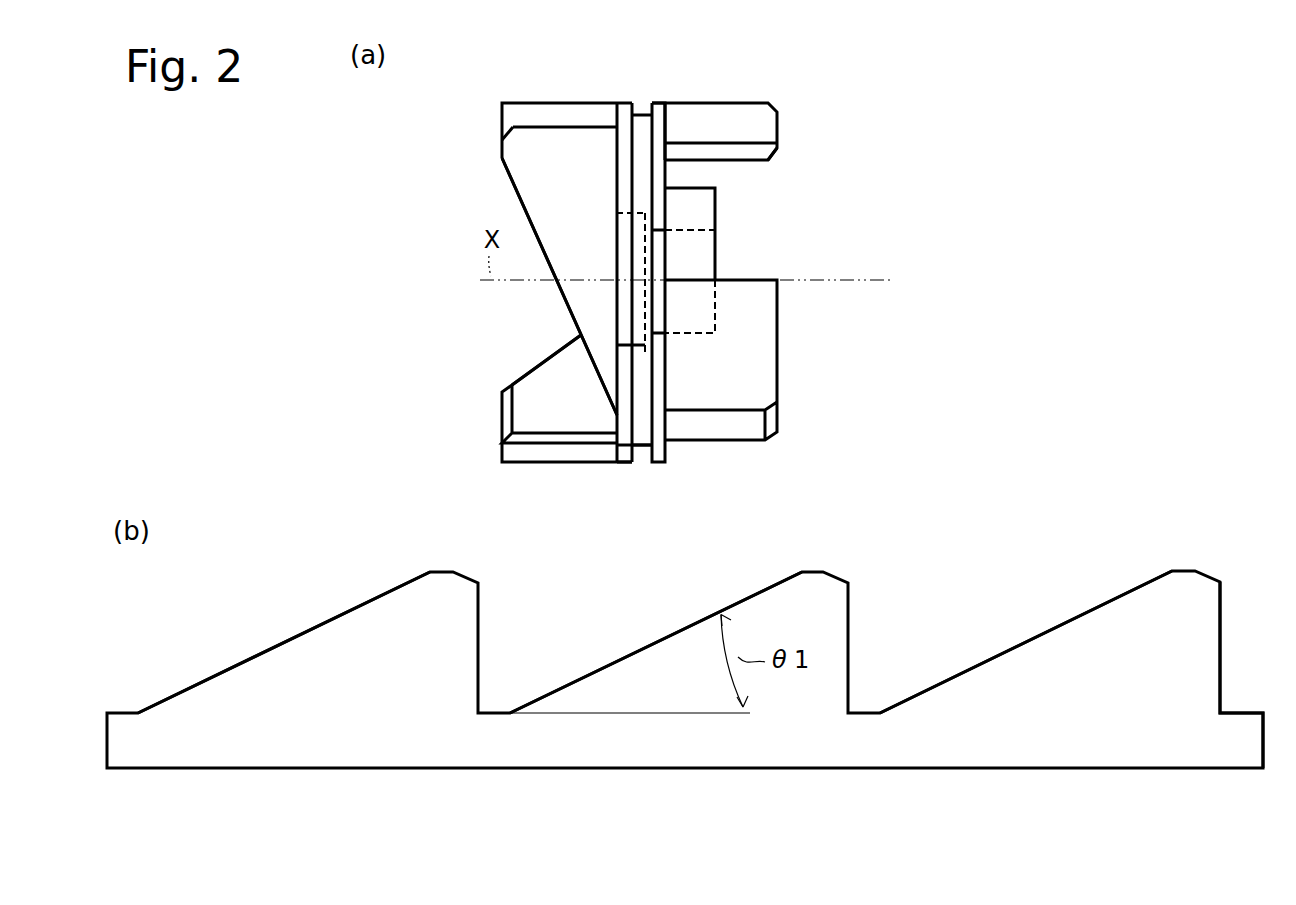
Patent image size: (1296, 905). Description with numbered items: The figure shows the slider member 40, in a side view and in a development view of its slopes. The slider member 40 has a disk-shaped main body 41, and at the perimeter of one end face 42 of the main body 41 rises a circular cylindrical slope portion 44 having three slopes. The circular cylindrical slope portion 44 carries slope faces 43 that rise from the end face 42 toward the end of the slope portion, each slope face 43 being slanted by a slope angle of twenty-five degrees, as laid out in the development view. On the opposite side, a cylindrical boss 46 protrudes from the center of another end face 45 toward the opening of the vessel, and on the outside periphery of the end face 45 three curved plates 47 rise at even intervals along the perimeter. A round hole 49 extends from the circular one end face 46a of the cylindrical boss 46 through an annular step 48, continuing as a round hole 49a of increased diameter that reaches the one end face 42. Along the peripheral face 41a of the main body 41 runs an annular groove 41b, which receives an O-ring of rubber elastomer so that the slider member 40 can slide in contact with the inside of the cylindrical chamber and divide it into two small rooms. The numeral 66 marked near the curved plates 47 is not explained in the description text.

The slider member 40 is at (476, 100).
The main body 41 is at (660, 465).
The peripheral face 41a is at (620, 465).
The annular groove 41b is at (640, 447).
The one end face 42 is at (601, 157).
The slope face 43 is at (510, 186).
The circular cylindrical slope portion 44 is at (528, 150).
The another end face 45 is at (668, 130).
The cylindrical boss 46 is at (715, 208).
The circular one end face 46a is at (715, 222).
The curved plates 47 is at (777, 123).
The annular step 48 is at (645, 353).
The round hole 49 is at (705, 263).
The round hole having increased diameter 49a is at (623, 315).
The chamfer 66 is at (787, 142).